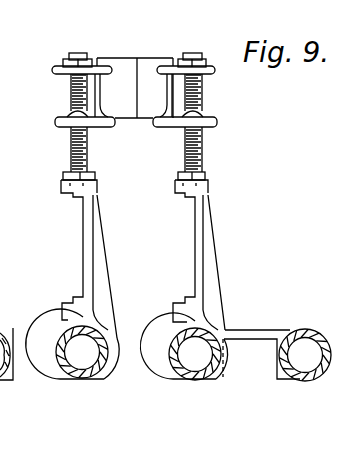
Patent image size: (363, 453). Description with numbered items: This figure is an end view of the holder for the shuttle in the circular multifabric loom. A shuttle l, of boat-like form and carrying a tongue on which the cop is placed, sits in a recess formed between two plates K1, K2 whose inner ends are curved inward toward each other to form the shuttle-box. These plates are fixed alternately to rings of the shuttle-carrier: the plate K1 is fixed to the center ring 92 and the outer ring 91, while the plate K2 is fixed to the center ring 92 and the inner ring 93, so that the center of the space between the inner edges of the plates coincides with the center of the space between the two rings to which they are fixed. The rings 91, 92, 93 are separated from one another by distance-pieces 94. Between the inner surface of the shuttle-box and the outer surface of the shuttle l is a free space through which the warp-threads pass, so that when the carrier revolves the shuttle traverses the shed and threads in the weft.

The shuttle l is at (149, 60).
The shuttle-box plate K1 is at (56, 77).
The shuttle-box plate K2 is at (212, 67).
The outer ring 91 is at (77, 380).
The center ring 92 is at (197, 380).
The inner ring 93 is at (303, 378).
The distance-piece 94 is at (268, 318).